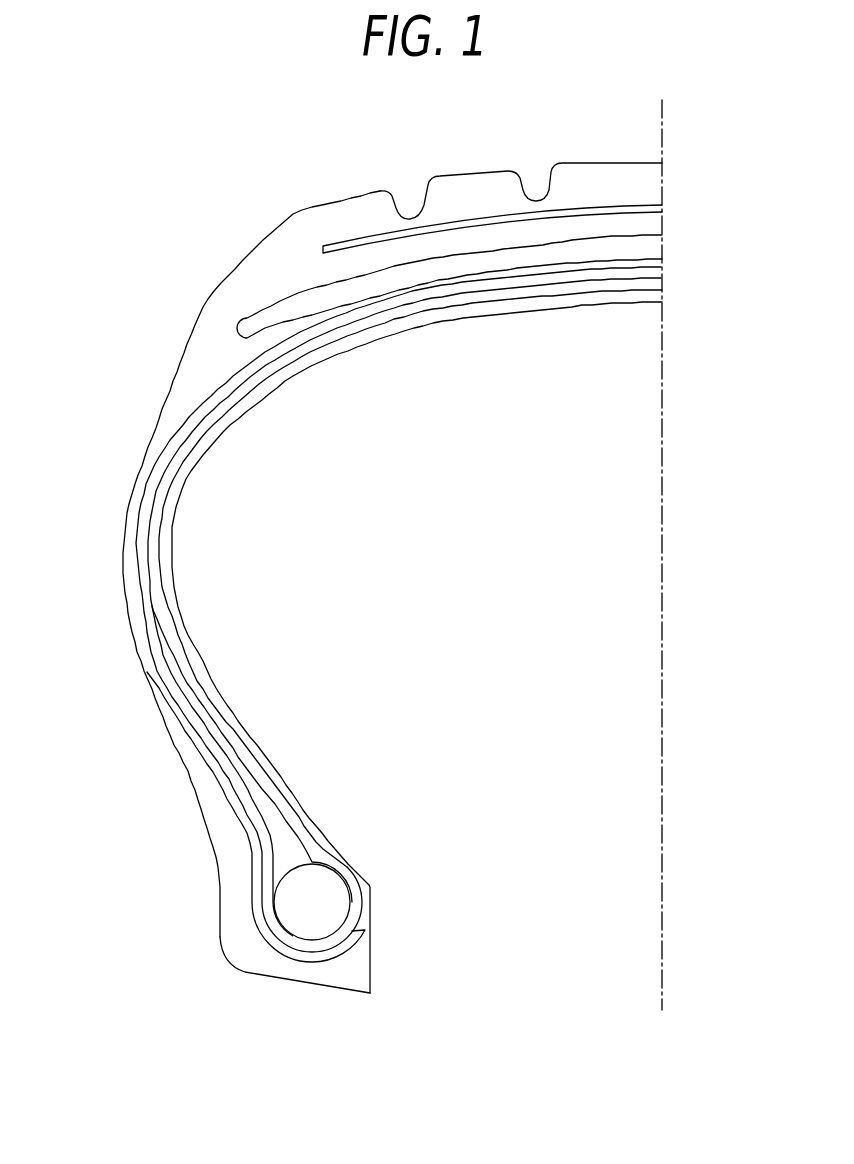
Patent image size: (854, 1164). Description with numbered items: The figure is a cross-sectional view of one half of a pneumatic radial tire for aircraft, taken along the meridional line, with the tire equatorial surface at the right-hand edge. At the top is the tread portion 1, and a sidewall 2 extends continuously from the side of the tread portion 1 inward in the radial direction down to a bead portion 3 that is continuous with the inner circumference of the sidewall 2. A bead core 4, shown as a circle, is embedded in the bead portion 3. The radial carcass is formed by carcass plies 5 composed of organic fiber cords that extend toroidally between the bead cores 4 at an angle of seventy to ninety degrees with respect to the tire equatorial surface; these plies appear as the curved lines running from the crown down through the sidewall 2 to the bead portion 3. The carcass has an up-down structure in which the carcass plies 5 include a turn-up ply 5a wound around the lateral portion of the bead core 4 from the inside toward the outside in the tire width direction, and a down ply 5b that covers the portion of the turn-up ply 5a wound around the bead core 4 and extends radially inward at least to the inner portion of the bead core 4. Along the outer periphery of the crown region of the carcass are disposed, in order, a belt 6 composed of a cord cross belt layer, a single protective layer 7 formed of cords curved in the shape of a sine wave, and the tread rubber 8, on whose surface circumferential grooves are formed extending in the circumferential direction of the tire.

The tread portion 1 is at (472, 168).
The sidewall 2 is at (117, 551).
The bead portion 3 is at (212, 905).
The bead core 4 is at (323, 900).
The carcass ply 5 is at (210, 690).
The turn-up ply 5a is at (290, 827).
The down ply 5b is at (242, 808).
The belt 6 is at (634, 249).
The protective layer 7 is at (626, 208).
The tread rubber 8 is at (593, 177).